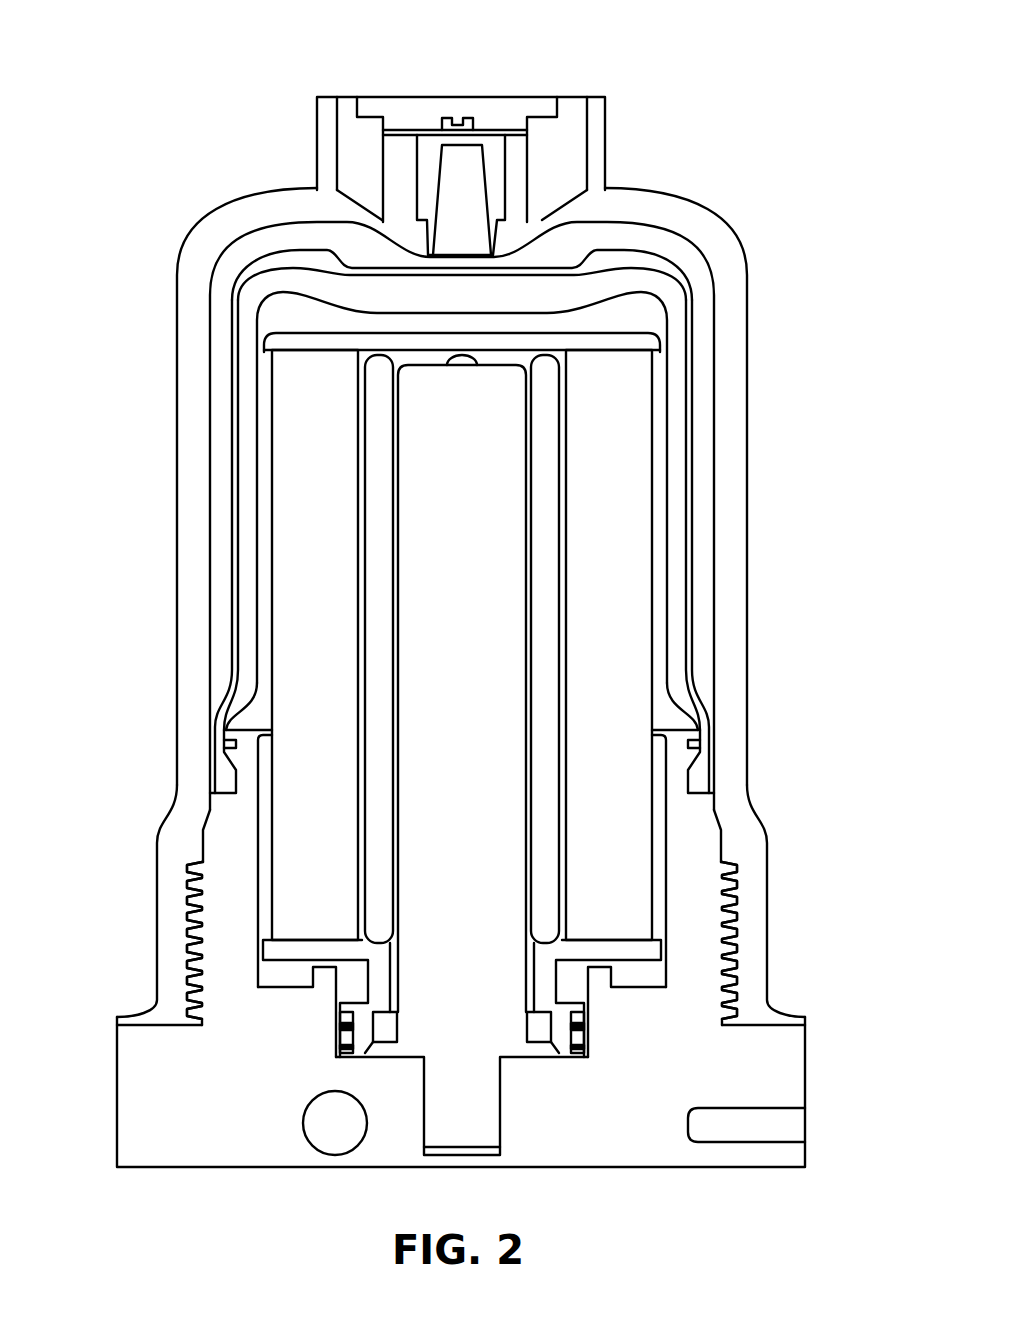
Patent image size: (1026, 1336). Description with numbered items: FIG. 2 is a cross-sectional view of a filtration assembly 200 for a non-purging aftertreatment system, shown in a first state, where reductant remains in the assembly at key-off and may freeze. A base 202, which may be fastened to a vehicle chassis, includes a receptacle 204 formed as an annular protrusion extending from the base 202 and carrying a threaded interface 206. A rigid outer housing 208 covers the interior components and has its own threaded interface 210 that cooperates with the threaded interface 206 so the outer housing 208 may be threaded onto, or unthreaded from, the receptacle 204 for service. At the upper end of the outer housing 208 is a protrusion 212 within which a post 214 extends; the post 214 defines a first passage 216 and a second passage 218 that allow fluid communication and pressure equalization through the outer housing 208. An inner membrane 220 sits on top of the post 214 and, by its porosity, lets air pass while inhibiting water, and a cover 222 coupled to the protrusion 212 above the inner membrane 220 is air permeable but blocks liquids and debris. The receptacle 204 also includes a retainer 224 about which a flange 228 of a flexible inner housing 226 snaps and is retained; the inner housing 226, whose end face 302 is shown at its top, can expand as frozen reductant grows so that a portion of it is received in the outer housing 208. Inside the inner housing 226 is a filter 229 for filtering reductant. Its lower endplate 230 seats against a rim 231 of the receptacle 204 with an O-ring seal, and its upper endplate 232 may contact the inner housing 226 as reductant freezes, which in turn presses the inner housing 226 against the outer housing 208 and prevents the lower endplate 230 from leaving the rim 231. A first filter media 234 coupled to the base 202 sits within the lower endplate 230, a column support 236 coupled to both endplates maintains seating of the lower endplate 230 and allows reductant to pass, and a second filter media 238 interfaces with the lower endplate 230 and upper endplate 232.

The filtration assembly 200 is at (468, 629).
The base 202 is at (258, 1190).
The receptacle 204 is at (716, 834).
The threaded interface 206 is at (192, 927).
The outer housing 208 is at (770, 291).
The threaded interface 210 is at (193, 952).
The protrusion 212 is at (298, 148).
The post 214 is at (530, 172).
The first passage 216 is at (413, 168).
The second passage 218 is at (507, 160).
The inner membrane 220 is at (436, 130).
The cover 222 is at (500, 110).
The retainer 224 is at (222, 742).
The inner housing 226 is at (698, 477).
The flange 228 is at (222, 770).
The filter 229 is at (292, 316).
The lower endplate 230 is at (640, 953).
The rim 231 is at (333, 967).
The upper endplate 232 is at (570, 340).
The first filter media 234 is at (487, 620).
The column support 236 is at (370, 470).
The second filter media 238 is at (603, 570).
The end face 302 is at (594, 262).